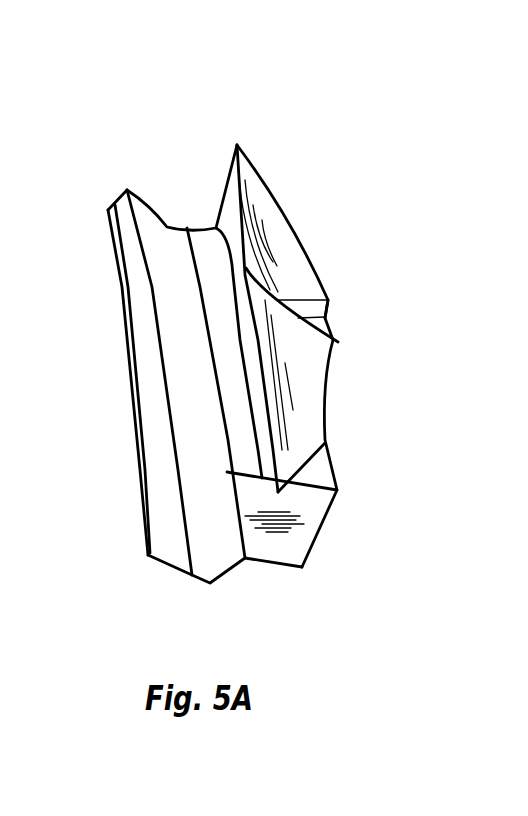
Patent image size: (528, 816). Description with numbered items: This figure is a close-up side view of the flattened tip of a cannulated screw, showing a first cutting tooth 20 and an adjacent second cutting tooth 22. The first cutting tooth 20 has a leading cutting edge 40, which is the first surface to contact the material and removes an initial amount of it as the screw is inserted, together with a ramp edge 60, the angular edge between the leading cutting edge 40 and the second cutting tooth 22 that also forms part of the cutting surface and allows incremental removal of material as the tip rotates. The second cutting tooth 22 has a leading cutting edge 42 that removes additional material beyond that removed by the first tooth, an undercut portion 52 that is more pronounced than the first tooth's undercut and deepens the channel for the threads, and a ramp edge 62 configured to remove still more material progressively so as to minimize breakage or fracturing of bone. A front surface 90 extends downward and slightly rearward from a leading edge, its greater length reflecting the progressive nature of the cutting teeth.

The first cutting tooth 20 is at (321, 533).
The second cutting tooth 22 is at (329, 319).
The leading cutting edge 40 is at (272, 568).
The leading cutting edge 42 is at (312, 444).
The undercut portion 52 is at (256, 318).
The ramp edge 60 is at (326, 517).
The ramp edge 62 is at (301, 318).
The front surface 90 is at (263, 515).